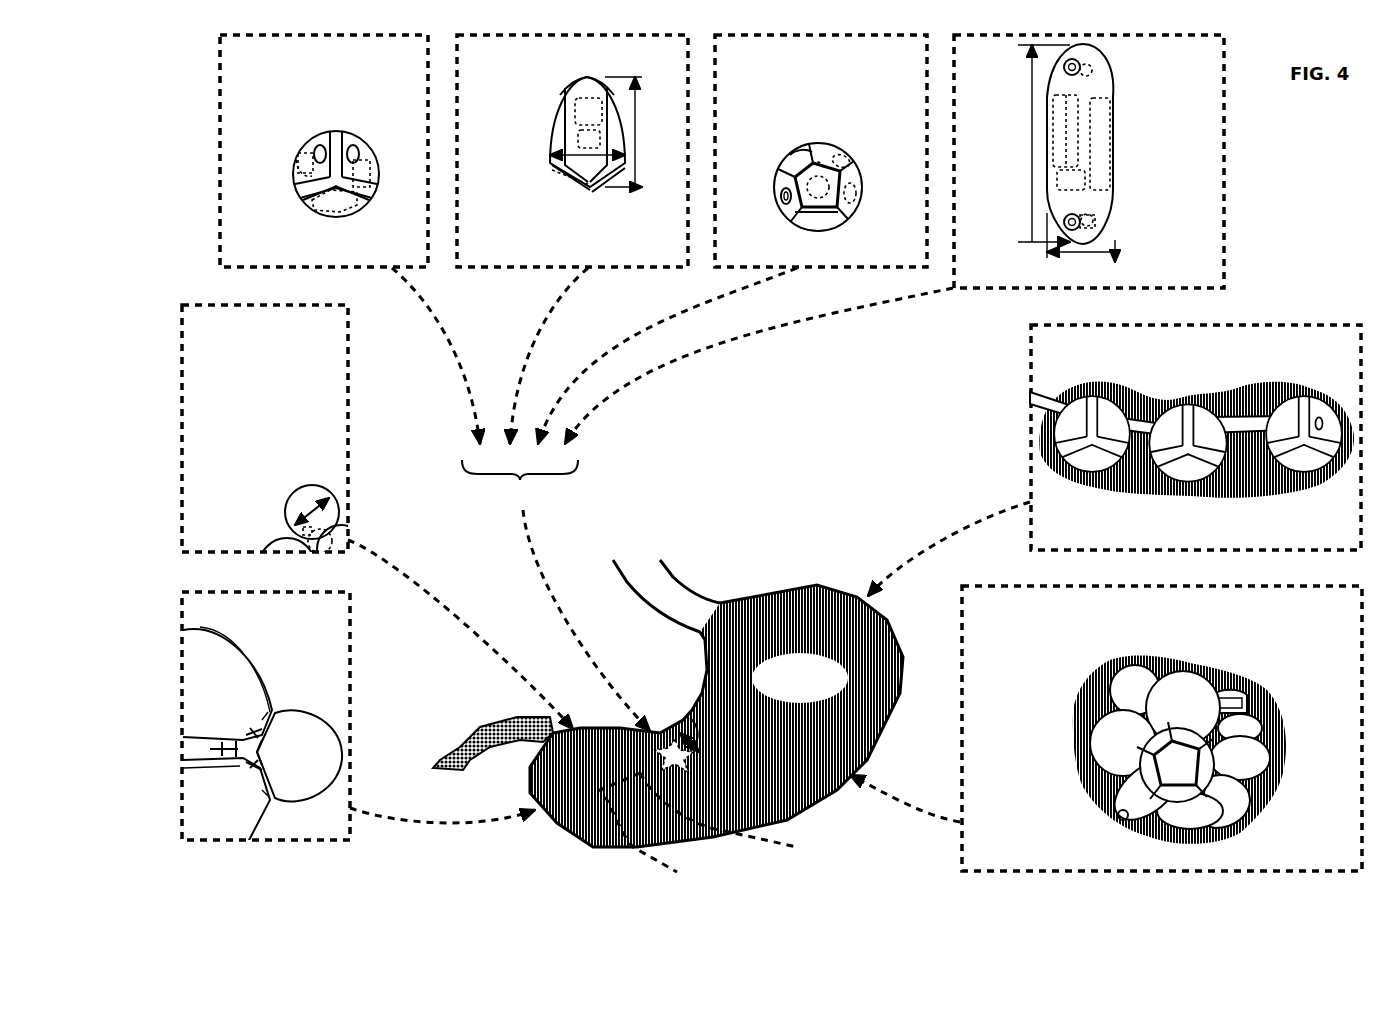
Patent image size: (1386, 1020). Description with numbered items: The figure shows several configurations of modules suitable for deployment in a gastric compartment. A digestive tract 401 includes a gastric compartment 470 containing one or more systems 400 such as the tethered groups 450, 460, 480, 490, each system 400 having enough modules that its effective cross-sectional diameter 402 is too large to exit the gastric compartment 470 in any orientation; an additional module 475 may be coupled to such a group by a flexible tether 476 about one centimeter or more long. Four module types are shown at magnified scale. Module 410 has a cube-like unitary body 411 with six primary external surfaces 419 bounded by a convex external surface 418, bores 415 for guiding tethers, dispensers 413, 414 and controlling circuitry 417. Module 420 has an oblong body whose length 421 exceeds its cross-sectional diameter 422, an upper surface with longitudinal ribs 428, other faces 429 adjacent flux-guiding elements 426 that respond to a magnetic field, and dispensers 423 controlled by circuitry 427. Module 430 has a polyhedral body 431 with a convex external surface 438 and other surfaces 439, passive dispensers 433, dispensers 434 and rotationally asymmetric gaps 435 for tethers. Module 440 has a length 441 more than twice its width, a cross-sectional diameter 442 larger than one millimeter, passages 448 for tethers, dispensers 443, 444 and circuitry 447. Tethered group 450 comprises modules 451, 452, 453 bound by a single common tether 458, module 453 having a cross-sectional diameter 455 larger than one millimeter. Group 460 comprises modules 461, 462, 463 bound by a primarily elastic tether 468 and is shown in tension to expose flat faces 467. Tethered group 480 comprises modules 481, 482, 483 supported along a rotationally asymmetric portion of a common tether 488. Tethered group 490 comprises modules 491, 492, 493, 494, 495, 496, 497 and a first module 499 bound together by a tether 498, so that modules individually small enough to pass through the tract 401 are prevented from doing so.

The system 400 is at (689, 545).
The digestive tract 401 is at (732, 492).
The effective cross-sectional diameter 402 is at (688, 732).
The module 410 is at (414, 90).
The cube-like unitary body 411 is at (308, 157).
The dispenser 413 is at (330, 212).
The dispenser 414 is at (362, 165).
The bore 415 is at (318, 150).
The circuitry 417 is at (300, 170).
The convex external surface 418 is at (337, 128).
The primary external surfaces 419 is at (363, 208).
The module 420 is at (511, 89).
The length 421 is at (638, 155).
The cross-sectional diameter 422 is at (595, 158).
The dispenser 423 is at (577, 105).
The flux-guiding element 426 is at (575, 178).
The circuitry 427 is at (578, 140).
The longitudinal ribs 428 is at (577, 80).
The faces 429 is at (575, 196).
The module 430 is at (914, 89).
The polyhedral body 431 is at (803, 153).
The passive dispenser 433 is at (856, 167).
The dispenser 434 is at (820, 170).
The rotationally asymmetric gap 435 is at (781, 198).
The convex external surface 438 is at (819, 143).
The other surfaces 439 is at (818, 229).
The module 440 is at (1191, 89).
The length 441 is at (1031, 140).
The cross-sectional diameter 442 is at (1047, 258).
The dispenser 443 is at (1105, 95).
The dispenser 444 is at (1108, 138).
The circuitry 447 is at (1075, 188).
The passage 448 is at (1092, 223).
The tethered group 450 is at (341, 383).
The module 451 is at (284, 548).
The module 452 is at (342, 505).
The module 453 is at (305, 500).
The cross-sectional diameter 455 is at (293, 525).
The common tether 458 is at (292, 533).
The group 460 is at (341, 646).
The module 461 is at (228, 806).
The module 462 is at (323, 759).
The module 463 is at (236, 703).
The flat faces 467 is at (272, 712).
The elastic tether 468 is at (263, 772).
The gastric compartment 470 is at (817, 689).
The additional module 475 is at (660, 831).
The flexible tether 476 is at (741, 817).
The tethered group 480 is at (1249, 544).
The module 481 is at (1295, 400).
The module 482 is at (1092, 400).
The module 483 is at (1188, 408).
The common tether 488 is at (1033, 394).
The tethered group 490 is at (1352, 668).
The module 491 is at (1105, 725).
The module 492 is at (1170, 690).
The module 493 is at (1122, 678).
The module 494 is at (1228, 690).
The module 495 is at (1262, 738).
The module 496 is at (1250, 790).
The module 497 is at (1185, 820).
The tether 498 is at (1118, 818).
The module 499 is at (1115, 790).